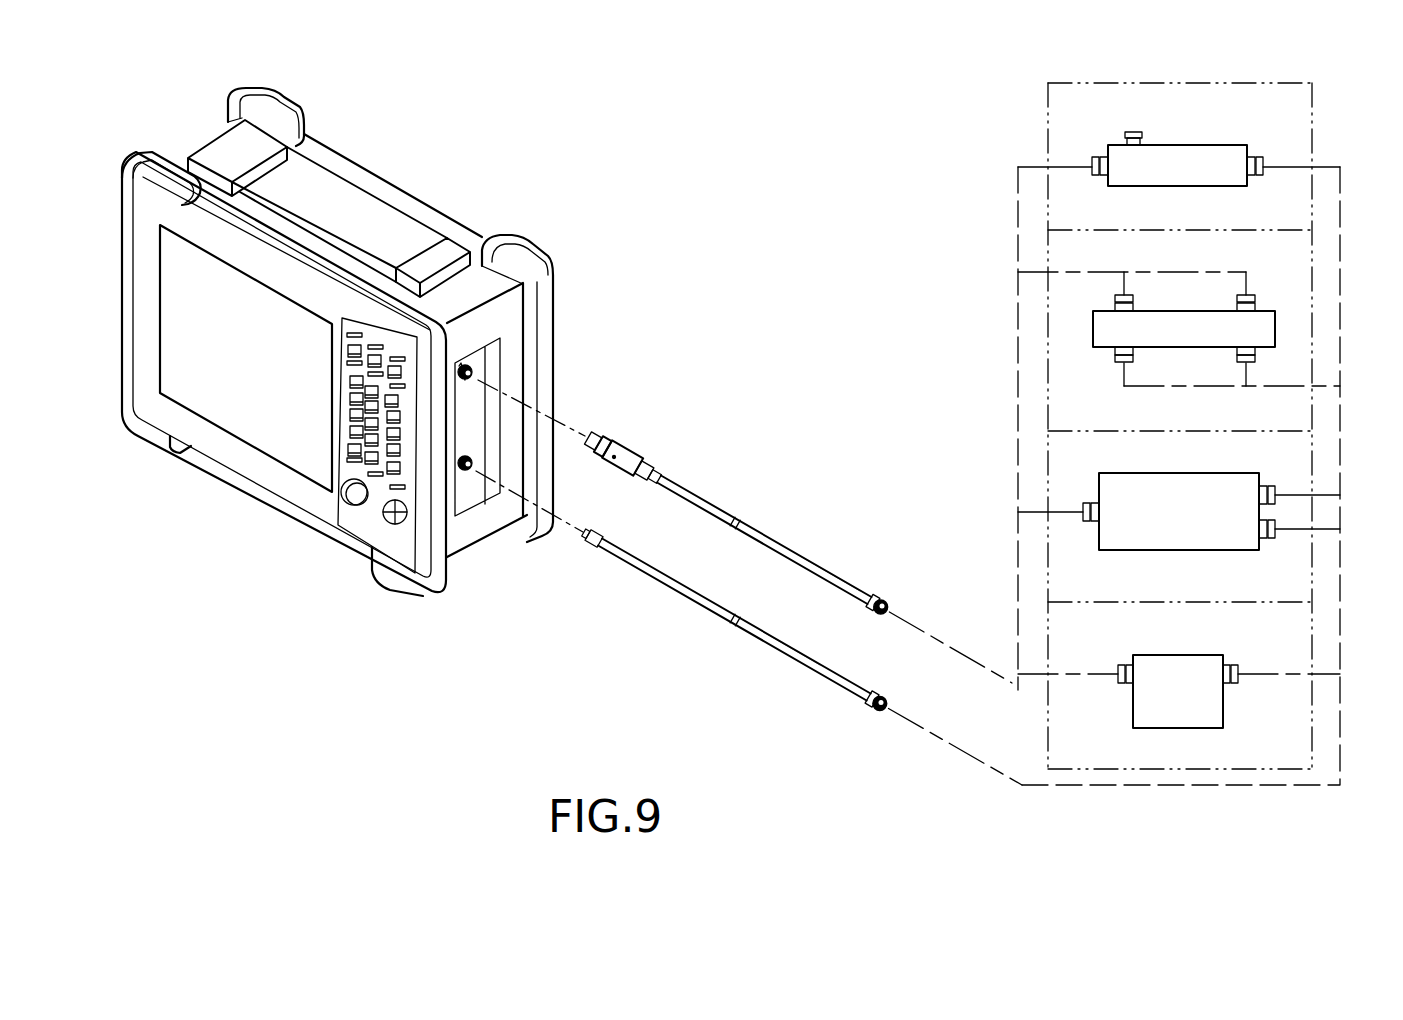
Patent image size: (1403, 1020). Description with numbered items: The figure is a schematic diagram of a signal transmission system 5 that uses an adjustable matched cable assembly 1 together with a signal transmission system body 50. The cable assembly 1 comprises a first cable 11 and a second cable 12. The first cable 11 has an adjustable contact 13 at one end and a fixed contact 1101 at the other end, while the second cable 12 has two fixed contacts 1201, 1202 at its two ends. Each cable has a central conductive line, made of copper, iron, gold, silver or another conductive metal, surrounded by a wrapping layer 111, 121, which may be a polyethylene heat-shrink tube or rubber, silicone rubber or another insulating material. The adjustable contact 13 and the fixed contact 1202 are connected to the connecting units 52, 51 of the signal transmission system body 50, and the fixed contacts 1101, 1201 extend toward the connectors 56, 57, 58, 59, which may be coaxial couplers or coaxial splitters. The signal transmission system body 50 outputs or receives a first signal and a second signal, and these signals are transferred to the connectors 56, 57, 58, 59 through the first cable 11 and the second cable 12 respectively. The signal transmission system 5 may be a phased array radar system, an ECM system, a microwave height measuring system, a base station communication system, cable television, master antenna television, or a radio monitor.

The adjustable matched cable assembly 1 is at (810, 502).
The signal transmission system 5 is at (807, 85).
The first cable 11 is at (728, 510).
The second cable 12 is at (705, 614).
The adjustable contact 13 is at (627, 448).
The signal transmission system body 50 is at (378, 190).
The connecting unit 51 is at (472, 470).
The connecting unit 52 is at (472, 374).
The connector 56 is at (1258, 147).
The connector 57 is at (1265, 305).
The connector 58 is at (1270, 475).
The connector 59 is at (1228, 694).
The wrapping layer 111 is at (828, 577).
The wrapping layer 121 is at (793, 657).
The fixed contact 1101 is at (876, 603).
The fixed contact 1201 is at (872, 707).
The fixed contact 1202 is at (588, 540).